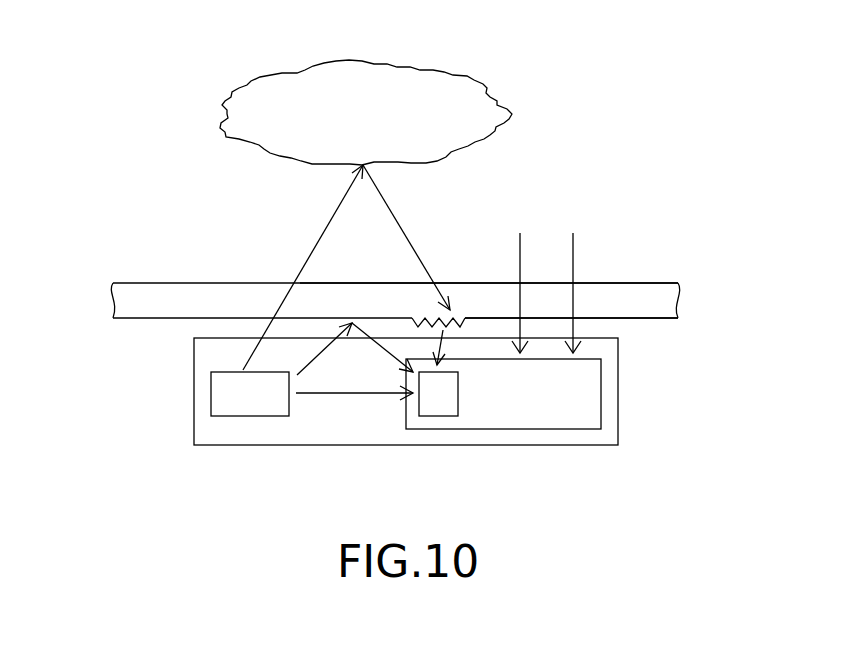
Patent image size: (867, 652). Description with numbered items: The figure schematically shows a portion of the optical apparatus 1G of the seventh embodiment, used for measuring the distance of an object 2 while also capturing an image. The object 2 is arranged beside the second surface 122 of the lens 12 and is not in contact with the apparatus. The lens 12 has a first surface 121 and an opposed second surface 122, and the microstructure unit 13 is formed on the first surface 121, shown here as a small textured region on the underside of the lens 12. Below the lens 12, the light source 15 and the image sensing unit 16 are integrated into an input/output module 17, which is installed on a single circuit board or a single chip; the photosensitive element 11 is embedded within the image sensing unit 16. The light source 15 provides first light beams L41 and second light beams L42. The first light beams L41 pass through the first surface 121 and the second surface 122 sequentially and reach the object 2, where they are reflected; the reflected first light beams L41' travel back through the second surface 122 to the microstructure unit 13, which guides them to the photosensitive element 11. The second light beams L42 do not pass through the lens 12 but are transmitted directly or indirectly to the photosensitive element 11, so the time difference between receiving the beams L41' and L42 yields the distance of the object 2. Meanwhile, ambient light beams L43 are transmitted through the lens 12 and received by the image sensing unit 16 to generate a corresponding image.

The optical apparatus 1G is at (582, 27).
The object 2 is at (271, 97).
The photosensitive element 11 is at (435, 405).
The lens 12 is at (153, 297).
The first surface 121 is at (640, 318).
The second surface 122 is at (652, 282).
The microstructure unit 13 is at (420, 317).
The light source 15 is at (227, 395).
The image sensing unit 16 is at (537, 415).
The input/output module 17 is at (193, 407).
The first light beams L41 is at (296, 267).
The reflected first light beams L41' is at (439, 294).
The second light beams L42 is at (323, 345).
The ambient light beams L43 is at (607, 223).